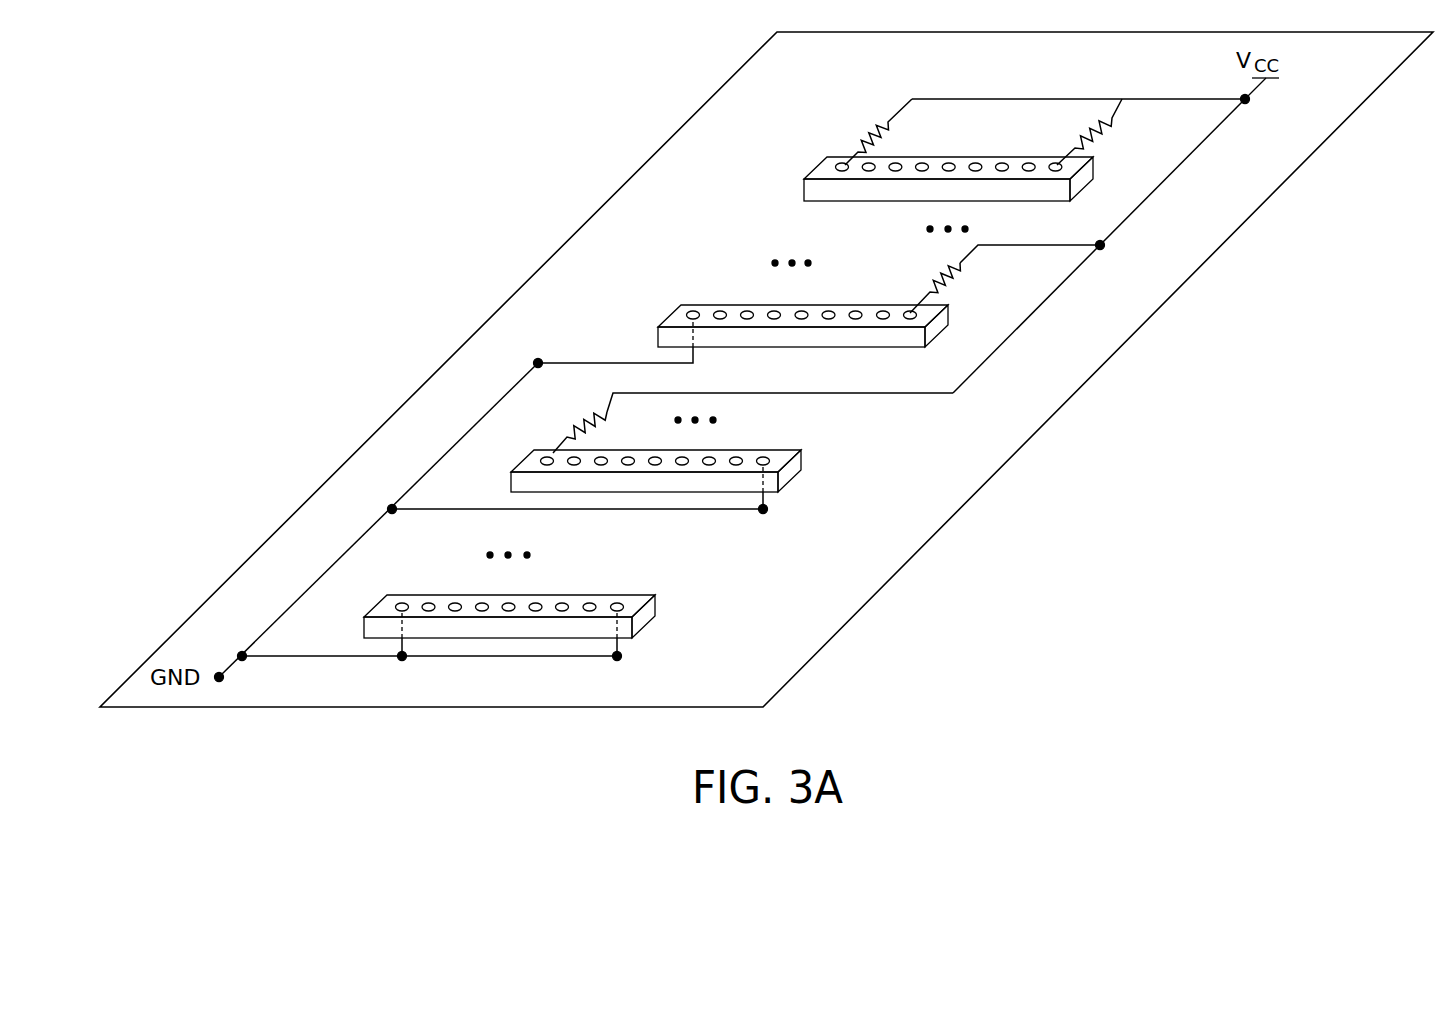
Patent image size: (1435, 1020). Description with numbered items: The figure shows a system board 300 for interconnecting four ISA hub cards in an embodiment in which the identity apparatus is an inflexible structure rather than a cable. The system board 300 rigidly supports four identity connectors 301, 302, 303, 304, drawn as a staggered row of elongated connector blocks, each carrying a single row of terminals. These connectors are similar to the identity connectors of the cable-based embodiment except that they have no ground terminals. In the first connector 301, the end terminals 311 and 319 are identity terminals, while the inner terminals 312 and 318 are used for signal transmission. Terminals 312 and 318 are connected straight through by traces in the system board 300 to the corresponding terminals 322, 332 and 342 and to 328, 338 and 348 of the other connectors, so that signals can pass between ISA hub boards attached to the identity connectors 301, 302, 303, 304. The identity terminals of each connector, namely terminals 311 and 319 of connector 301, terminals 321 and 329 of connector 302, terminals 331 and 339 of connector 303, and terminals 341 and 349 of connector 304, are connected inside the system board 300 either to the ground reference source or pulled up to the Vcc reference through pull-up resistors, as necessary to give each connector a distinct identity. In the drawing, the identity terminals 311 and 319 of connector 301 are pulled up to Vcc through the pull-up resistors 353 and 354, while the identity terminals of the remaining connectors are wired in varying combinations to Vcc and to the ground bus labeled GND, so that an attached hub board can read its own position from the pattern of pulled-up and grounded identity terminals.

The system board 300 is at (1053, 395).
The identity connector 301 is at (827, 168).
The identity connector 302 is at (680, 316).
The identity connector 303 is at (788, 470).
The identity connector 304 is at (643, 615).
The identity terminal 311 is at (838, 171).
The terminal 312 is at (871, 171).
The terminal 318 is at (1025, 171).
The identity terminal 319 is at (1058, 171).
The identity terminal 321 is at (690, 311).
The terminal 322 is at (724, 311).
The terminal 328 is at (852, 311).
The identity terminal 329 is at (907, 311).
The identity terminal 331 is at (543, 457).
The terminal 332 is at (580, 457).
The terminal 338 is at (740, 457).
The identity terminal 339 is at (770, 457).
The identity terminal 341 is at (396, 603).
The terminal 342 is at (431, 603).
The terminal 348 is at (587, 603).
The identity terminal 349 is at (620, 603).
The pull-up resistor 353 is at (880, 124).
The pull-up resistor 354 is at (1100, 129).